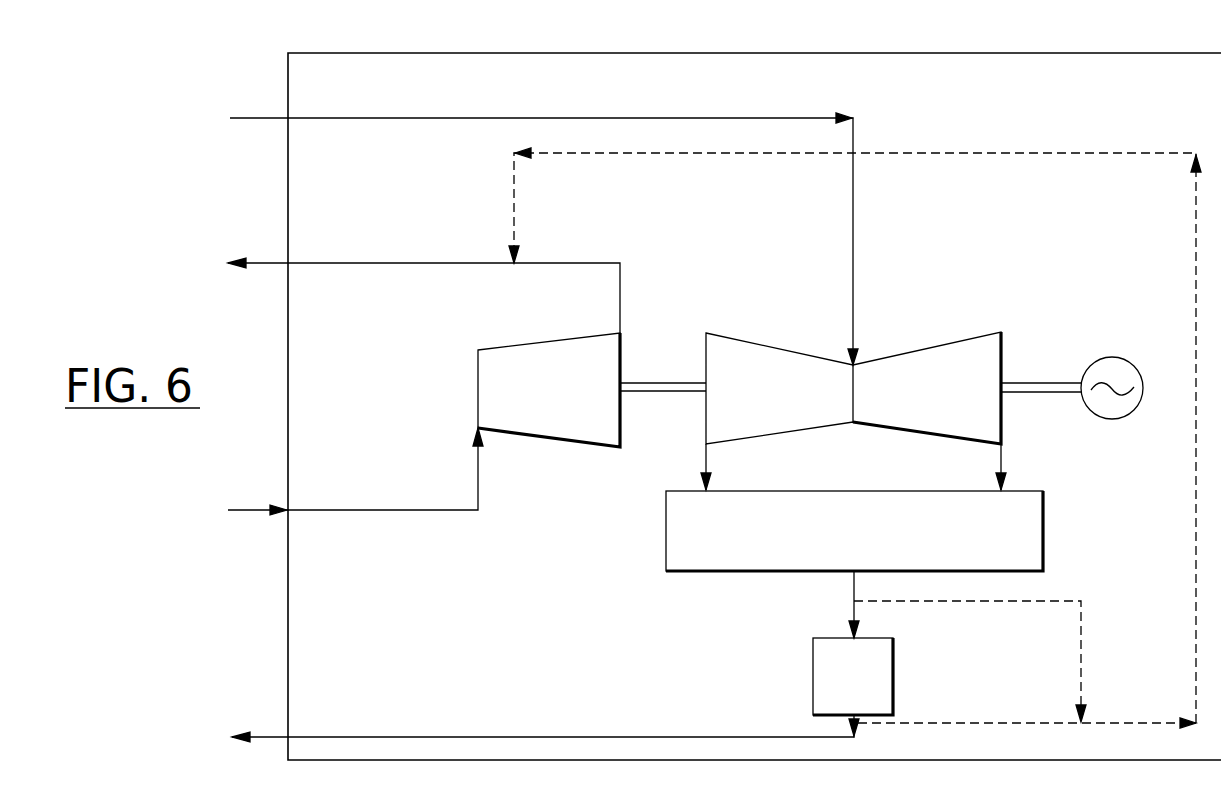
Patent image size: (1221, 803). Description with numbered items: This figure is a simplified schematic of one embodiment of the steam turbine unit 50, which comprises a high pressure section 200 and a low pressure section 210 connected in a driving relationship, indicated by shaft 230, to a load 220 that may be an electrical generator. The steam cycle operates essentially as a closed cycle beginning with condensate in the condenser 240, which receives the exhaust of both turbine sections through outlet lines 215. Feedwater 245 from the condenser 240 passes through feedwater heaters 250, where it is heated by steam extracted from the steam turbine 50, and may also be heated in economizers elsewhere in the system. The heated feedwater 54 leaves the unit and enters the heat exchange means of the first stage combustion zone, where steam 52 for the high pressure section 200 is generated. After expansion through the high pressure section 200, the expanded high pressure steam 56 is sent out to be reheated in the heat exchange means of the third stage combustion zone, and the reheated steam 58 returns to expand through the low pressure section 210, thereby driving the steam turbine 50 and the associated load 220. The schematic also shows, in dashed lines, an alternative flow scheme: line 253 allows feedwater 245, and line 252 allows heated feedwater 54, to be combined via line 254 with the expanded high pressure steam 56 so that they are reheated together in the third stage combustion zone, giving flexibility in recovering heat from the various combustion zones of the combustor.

The steam turbine unit 50 is at (427, 762).
The high pressure steam 52 is at (262, 508).
The heated feedwater 54 is at (272, 736).
The expanded high pressure steam 56 is at (265, 262).
The reheated steam 58 is at (870, 240).
The high pressure section 200 is at (493, 432).
The low pressure section 210 is at (880, 358).
The turbine exhaust lines 215 is at (706, 459).
The load 220 is at (1118, 358).
The shaft 230 is at (647, 383).
The condenser 240 is at (1045, 538).
The feedwater 245 is at (856, 586).
The feedwater heaters 250 is at (895, 683).
The line 252 is at (932, 725).
The line 253 is at (1084, 660).
The line 254 is at (1105, 725).